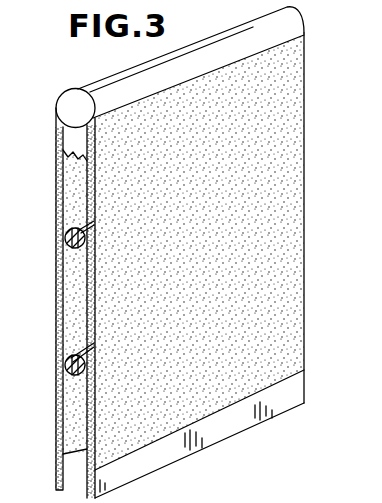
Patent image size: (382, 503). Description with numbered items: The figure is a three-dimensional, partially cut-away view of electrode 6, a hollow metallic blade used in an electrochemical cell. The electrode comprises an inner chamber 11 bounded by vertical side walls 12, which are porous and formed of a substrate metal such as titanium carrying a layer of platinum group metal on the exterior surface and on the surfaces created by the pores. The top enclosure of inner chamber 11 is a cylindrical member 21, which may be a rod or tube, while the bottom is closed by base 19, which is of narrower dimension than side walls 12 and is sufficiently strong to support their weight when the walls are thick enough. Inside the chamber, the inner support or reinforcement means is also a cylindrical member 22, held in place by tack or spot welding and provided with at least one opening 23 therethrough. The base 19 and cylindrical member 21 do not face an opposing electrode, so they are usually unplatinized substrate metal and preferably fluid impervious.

The electrode 6 is at (307, 148).
The inner chamber 11 is at (78, 273).
The vertical side walls 12 is at (56, 214).
The base 19 is at (60, 465).
The cylindrical member 21 is at (100, 86).
The cylindrical member 22 is at (66, 238).
The opening 23 is at (66, 252).